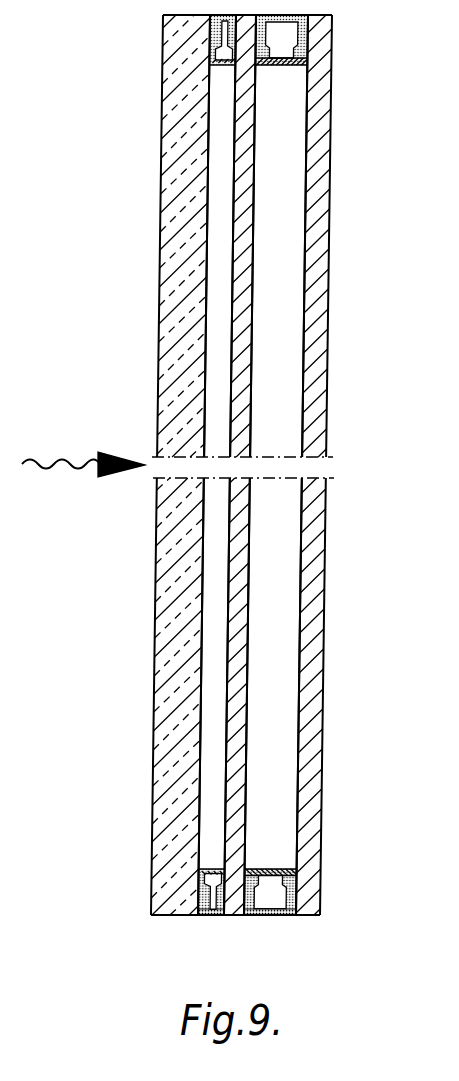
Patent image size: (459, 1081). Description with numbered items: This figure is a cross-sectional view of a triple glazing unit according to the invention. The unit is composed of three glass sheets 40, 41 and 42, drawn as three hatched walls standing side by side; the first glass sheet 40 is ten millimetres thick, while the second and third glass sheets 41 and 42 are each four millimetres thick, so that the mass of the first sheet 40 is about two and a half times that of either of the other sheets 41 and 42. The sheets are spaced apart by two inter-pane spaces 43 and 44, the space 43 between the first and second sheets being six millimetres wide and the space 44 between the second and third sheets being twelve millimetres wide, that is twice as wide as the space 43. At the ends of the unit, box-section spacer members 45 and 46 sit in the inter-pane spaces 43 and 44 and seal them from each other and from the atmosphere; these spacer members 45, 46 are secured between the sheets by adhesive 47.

The glass sheet 40 is at (178, 508).
The glass sheet 41 is at (237, 488).
The glass sheet 42 is at (303, 680).
The inter-pane space 43 is at (223, 750).
The inter-pane space 44 is at (282, 750).
The box-section spacer member 45 is at (220, 873).
The box-section spacer member 46 is at (287, 880).
The adhesive 47 is at (280, 917).